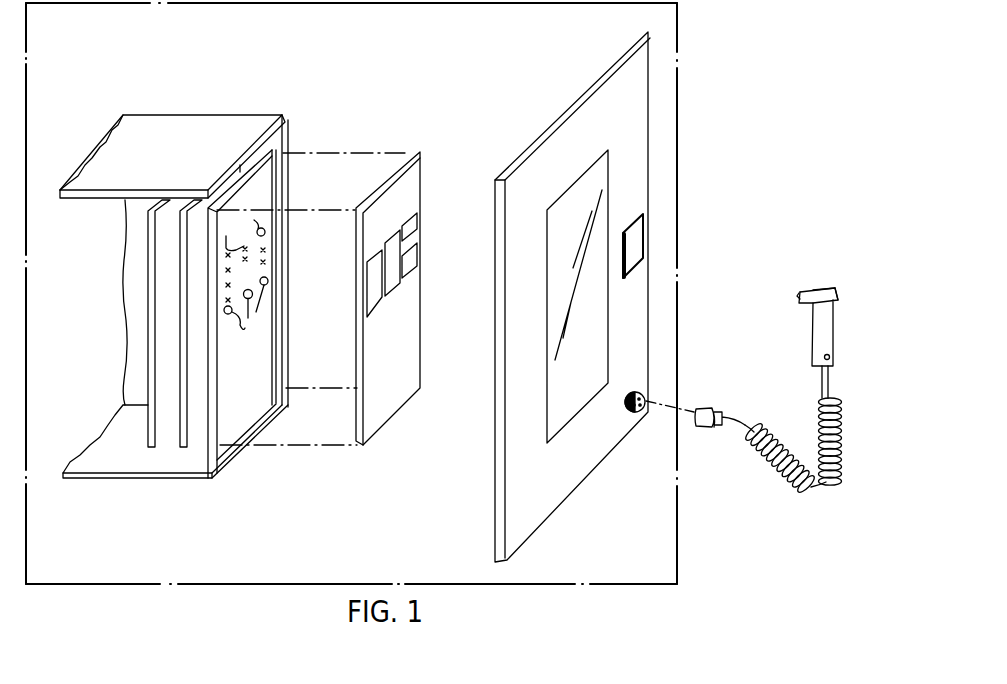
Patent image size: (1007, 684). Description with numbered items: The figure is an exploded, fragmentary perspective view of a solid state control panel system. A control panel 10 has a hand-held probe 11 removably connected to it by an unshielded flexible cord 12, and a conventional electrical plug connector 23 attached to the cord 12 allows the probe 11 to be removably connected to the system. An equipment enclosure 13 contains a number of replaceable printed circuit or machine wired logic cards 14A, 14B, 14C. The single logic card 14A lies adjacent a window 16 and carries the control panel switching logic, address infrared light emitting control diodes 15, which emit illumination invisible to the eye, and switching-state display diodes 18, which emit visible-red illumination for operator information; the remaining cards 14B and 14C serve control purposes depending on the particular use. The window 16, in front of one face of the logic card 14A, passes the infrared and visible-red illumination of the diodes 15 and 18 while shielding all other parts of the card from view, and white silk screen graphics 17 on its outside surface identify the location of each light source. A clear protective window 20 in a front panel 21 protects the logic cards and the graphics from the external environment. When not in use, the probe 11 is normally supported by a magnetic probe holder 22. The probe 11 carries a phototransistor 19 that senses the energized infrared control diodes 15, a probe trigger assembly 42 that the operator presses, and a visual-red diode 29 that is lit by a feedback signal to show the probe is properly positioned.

The control panel 10 is at (677, 40).
The hand-held probe 11 is at (812, 312).
The flexible cord 12 is at (806, 490).
The equipment enclosure 13 is at (186, 480).
The logic card 14A is at (229, 314).
The logic card 14B is at (182, 446).
The logic card 14C is at (148, 446).
The infrared light emitting control diodes 15 is at (246, 278).
The window 16 is at (388, 306).
The graphics 17 is at (397, 308).
The switching-state display diodes 18 is at (241, 260).
The phototransistor 19 is at (797, 295).
The protective window 20 is at (558, 403).
The front panel 21 is at (557, 510).
The magnetic probe holder 22 is at (626, 215).
The electrical plug connector 23 is at (702, 428).
The visual-red diode 29 is at (840, 302).
The probe trigger assembly 42 is at (816, 288).